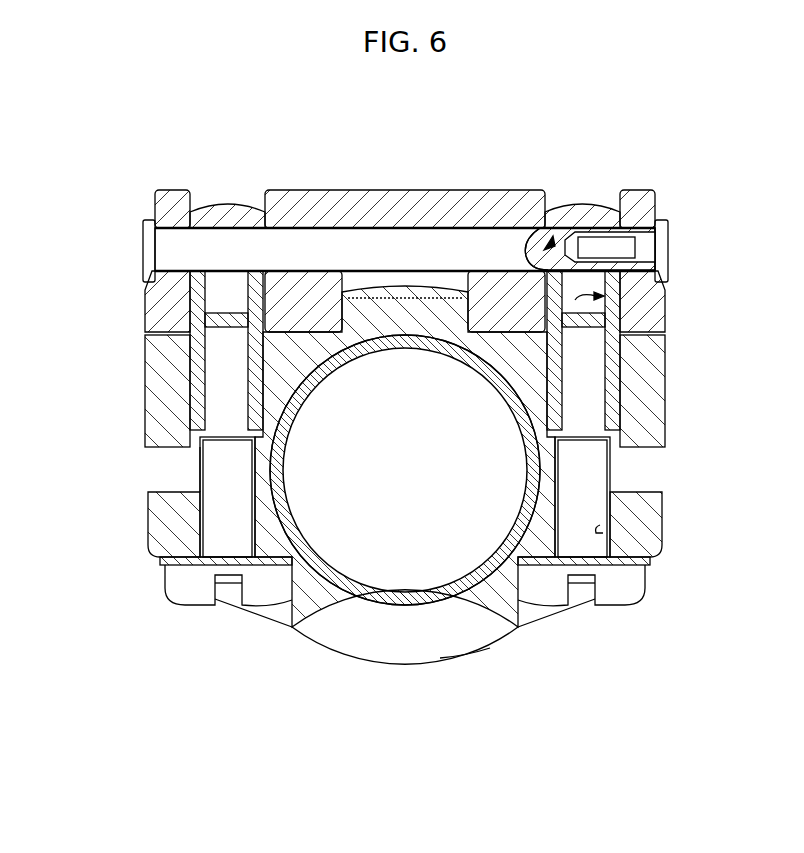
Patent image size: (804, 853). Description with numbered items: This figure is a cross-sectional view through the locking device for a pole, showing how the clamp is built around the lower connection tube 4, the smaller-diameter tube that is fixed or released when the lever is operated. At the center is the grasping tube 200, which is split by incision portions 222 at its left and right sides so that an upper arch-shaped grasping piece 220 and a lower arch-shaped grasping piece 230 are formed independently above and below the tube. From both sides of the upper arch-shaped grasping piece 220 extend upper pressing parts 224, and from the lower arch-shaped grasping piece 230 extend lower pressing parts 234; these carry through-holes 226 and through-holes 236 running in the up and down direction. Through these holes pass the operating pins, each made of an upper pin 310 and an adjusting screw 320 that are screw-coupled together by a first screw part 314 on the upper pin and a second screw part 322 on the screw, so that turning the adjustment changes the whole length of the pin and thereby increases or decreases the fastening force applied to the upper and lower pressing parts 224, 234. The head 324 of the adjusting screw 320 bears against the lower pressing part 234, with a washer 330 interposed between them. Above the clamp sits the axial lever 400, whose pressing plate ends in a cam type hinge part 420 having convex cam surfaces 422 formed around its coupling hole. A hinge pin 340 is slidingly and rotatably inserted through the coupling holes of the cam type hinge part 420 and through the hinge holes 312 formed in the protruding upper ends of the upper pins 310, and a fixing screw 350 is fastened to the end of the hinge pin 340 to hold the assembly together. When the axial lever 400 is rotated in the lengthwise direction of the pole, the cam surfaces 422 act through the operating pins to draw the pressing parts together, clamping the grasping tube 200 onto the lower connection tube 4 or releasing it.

The grasping tube 200 is at (342, 652).
The lower arch-shaped grasping piece 230 is at (385, 655).
The lower connection tube 4 is at (465, 654).
The upper arch-shaped grasping piece 220 is at (405, 350).
The hinge pin 340 is at (148, 243).
The fixing screw 350 is at (668, 242).
The axial lever 400 is at (363, 188).
The hinge hole 312 is at (524, 250).
The cam type hinge part 420 is at (150, 290).
The cam surfaces 422 is at (290, 348).
The upper pressing part 224 is at (145, 437).
The incision portion 222 is at (150, 477).
The adjusting screw 320 is at (612, 470).
The lower pressing part 234 is at (155, 530).
The washer 330 is at (645, 565).
The first screw part 314 is at (622, 305).
The upper pin 310 is at (628, 415).
The second screw part 322 is at (612, 365).
The through-hole 226 is at (632, 442).
The through-hole 236 is at (632, 522).
The head 324 is at (620, 600).